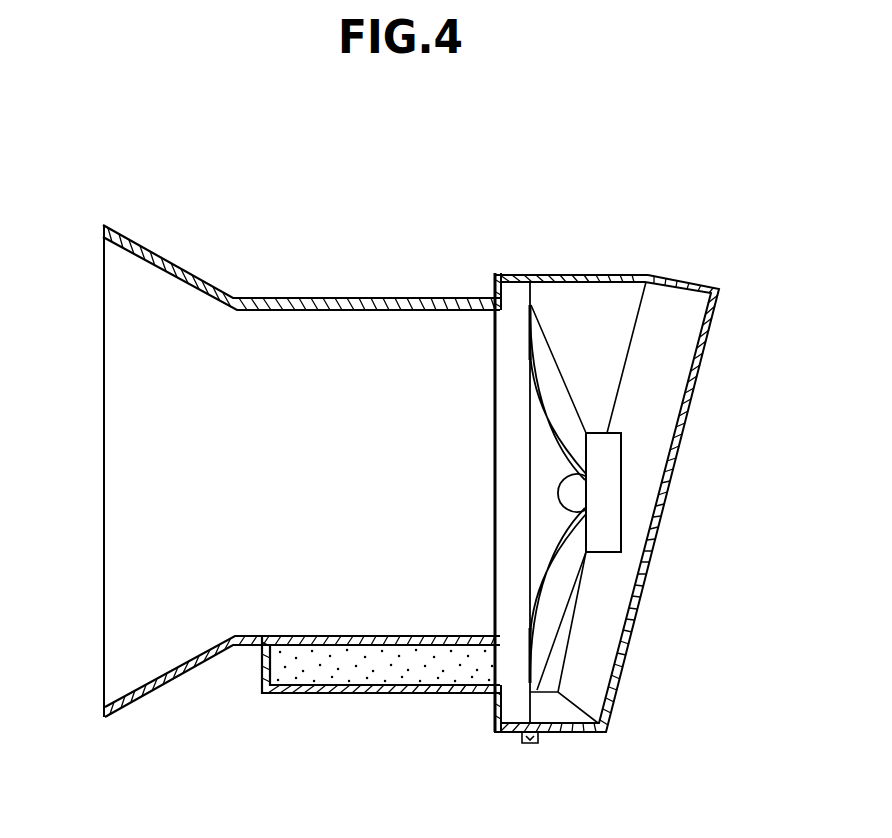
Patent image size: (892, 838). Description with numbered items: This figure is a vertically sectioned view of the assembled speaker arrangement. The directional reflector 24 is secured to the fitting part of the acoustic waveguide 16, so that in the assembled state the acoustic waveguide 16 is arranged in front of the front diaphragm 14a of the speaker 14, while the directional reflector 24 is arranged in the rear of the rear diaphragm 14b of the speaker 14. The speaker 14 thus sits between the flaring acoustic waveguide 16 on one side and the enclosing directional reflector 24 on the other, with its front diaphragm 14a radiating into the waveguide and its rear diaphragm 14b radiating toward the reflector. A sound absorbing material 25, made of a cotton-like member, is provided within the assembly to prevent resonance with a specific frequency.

The acoustic waveguide 16 is at (339, 299).
The directional reflector 24 is at (650, 377).
The speaker 14 is at (613, 493).
The front diaphragm 14a is at (548, 560).
The rear diaphragm 14b is at (537, 606).
The sound absorbing material 25 is at (320, 673).